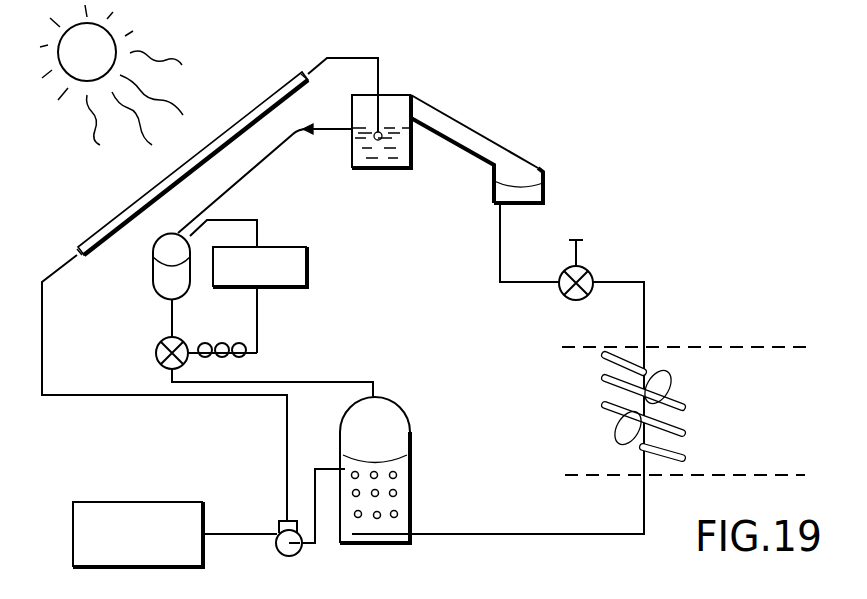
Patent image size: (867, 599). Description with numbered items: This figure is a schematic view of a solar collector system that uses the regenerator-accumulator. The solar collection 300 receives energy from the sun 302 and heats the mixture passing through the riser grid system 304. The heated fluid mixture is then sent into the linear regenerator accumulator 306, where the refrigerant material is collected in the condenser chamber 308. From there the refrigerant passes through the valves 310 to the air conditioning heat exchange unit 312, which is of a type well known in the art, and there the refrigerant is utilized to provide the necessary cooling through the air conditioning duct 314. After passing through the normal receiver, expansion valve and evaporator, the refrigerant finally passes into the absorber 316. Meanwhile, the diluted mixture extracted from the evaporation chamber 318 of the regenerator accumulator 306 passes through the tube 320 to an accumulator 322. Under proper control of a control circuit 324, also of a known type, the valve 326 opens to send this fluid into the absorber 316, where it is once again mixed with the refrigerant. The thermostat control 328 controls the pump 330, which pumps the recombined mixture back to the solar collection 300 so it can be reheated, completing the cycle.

The solar collection 300 is at (157, 183).
The sun 302 is at (68, 42).
The riser grid system 304 is at (312, 68).
The linear regenerator accumulator 306 is at (428, 103).
The condenser chamber 308 is at (547, 193).
The valves 310 is at (595, 273).
The air conditioning heat exchange unit 312 is at (672, 347).
The air conditioning duct 314 is at (787, 367).
The absorber 316 is at (412, 463).
The evaporation chamber 318 is at (373, 152).
The tube 320 is at (260, 163).
The accumulator 322 is at (162, 298).
The control circuit 324 is at (308, 273).
The valve 326 is at (182, 340).
The thermostat control 328 is at (138, 500).
The pump 330 is at (277, 527).